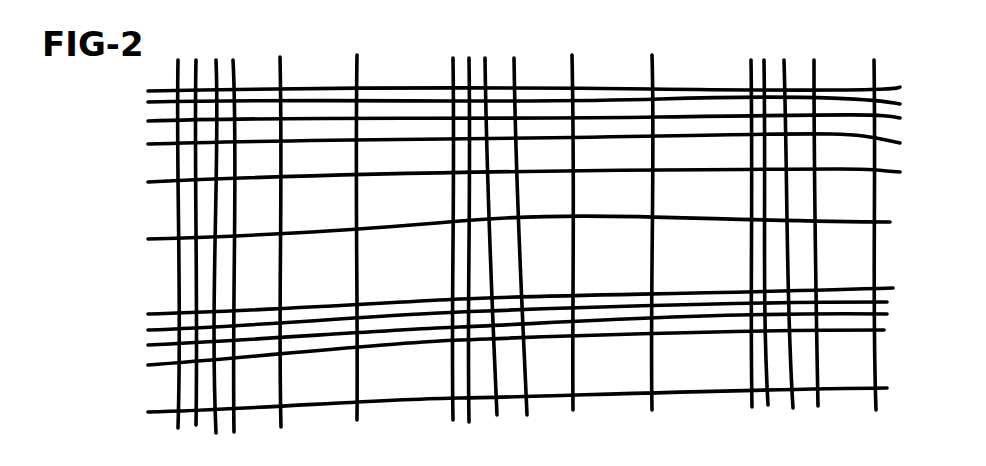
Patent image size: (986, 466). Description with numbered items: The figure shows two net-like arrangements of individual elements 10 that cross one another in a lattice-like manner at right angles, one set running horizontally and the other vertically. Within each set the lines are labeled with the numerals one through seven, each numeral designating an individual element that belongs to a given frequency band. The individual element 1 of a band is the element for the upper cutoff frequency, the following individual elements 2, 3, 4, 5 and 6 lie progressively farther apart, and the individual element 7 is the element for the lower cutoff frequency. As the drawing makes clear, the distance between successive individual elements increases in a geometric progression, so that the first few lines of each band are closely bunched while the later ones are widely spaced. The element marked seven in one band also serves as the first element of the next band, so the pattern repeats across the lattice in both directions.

The individual element for the upper cutoff frequency 1 is at (499, 218).
The individual element 2 is at (504, 217).
The individual element 3 is at (499, 221).
The individual element 4 is at (506, 220).
The individual element 5 is at (502, 229).
The individual element 6 is at (508, 214).
The individual element for the lower cutoff frequency 7 is at (510, 214).
The individual elements 10 is at (911, 162).